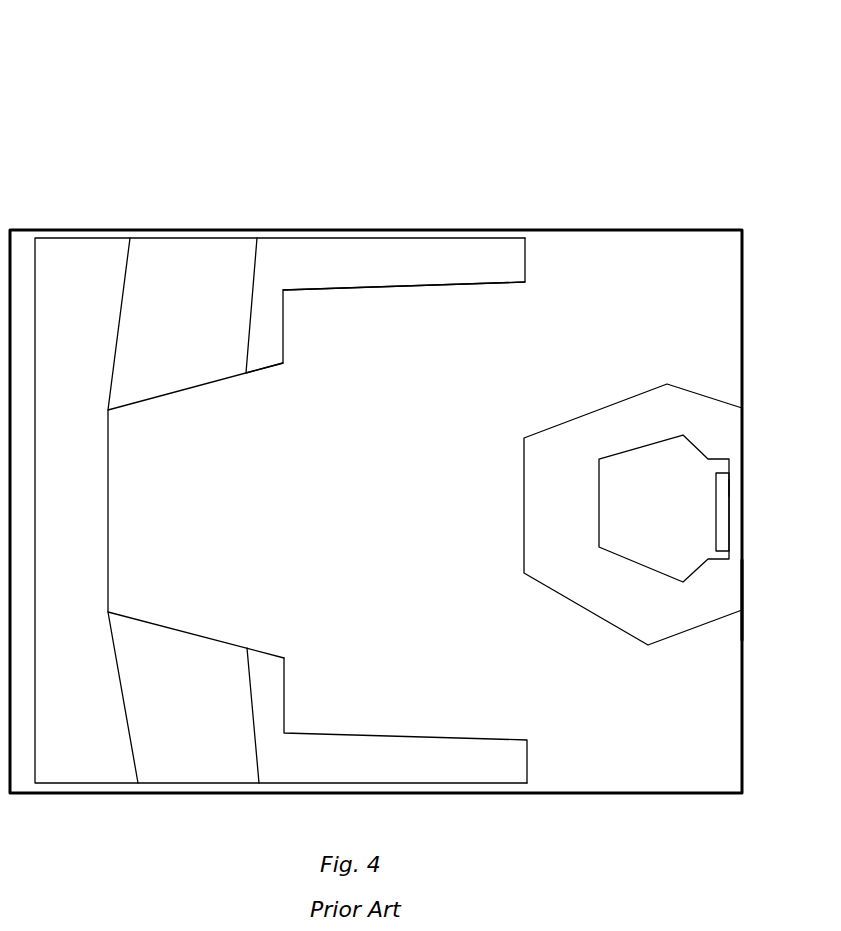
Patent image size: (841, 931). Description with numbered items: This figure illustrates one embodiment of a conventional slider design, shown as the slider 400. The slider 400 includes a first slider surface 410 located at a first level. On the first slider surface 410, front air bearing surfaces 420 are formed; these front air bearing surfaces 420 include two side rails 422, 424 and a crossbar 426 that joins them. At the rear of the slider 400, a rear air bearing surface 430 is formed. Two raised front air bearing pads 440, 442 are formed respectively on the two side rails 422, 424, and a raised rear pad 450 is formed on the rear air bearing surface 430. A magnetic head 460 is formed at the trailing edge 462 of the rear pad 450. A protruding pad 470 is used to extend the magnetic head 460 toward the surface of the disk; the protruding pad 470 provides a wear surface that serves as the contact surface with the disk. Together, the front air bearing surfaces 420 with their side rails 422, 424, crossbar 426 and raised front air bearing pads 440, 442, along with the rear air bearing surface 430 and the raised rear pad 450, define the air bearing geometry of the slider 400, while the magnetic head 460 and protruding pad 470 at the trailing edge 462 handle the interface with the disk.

The slider 400 is at (470, 104).
The first slider surface 410 is at (595, 250).
The front air bearing surfaces 420 is at (200, 230).
The side rail 422 is at (410, 283).
The side rail 424 is at (395, 735).
The crossbar 426 is at (109, 503).
The rear air bearing surface 430 is at (545, 428).
The raised front air bearing pad 440 is at (215, 383).
The raised front air bearing pad 442 is at (210, 640).
The raised rear pad 450 is at (637, 445).
The magnetic head 460 is at (730, 487).
The trailing edge 462 is at (743, 587).
The protruding pad 470 is at (725, 523).